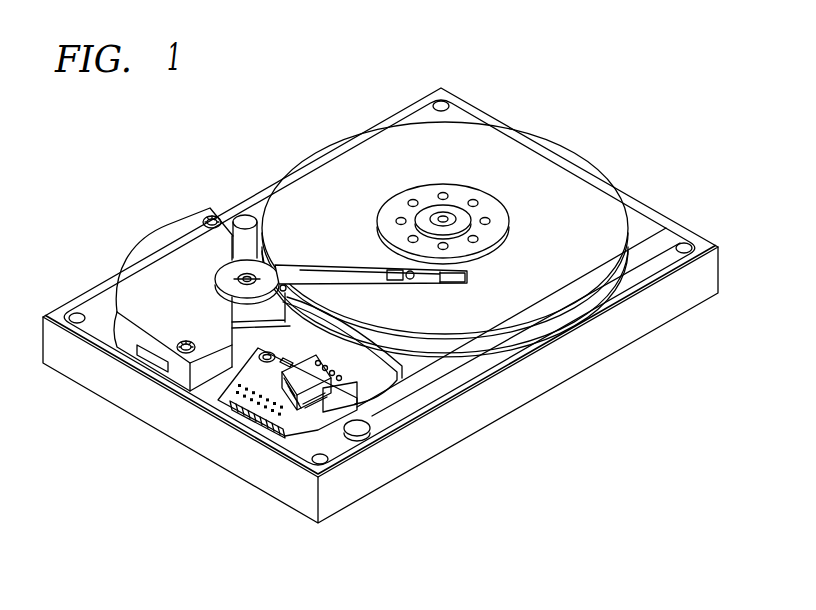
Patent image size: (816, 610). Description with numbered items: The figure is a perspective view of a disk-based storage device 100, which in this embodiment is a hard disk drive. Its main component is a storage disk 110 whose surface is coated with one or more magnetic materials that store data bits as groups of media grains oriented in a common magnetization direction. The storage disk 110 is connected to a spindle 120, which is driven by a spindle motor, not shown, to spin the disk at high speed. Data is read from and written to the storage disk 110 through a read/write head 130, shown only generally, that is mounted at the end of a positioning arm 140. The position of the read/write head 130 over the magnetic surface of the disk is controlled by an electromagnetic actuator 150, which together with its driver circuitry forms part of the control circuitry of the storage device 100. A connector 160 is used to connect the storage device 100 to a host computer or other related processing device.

The disk-based storage device 100 is at (168, 134).
The storage disk 110 is at (555, 158).
The spindle 120 is at (465, 217).
The read/write head 130 is at (437, 272).
The positioning arm 140 is at (312, 268).
The electromagnetic actuator 150 is at (148, 265).
The connector 160 is at (262, 400).